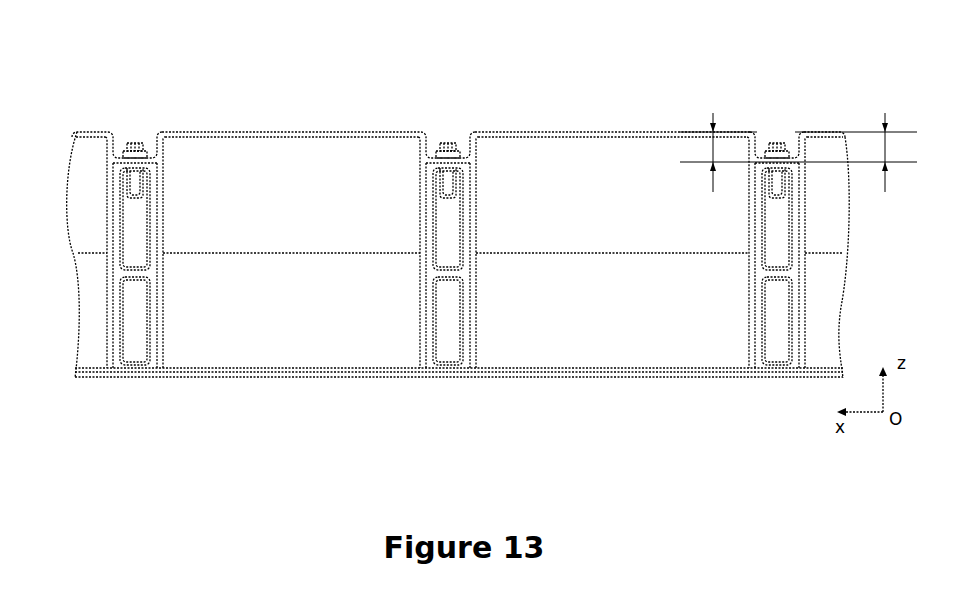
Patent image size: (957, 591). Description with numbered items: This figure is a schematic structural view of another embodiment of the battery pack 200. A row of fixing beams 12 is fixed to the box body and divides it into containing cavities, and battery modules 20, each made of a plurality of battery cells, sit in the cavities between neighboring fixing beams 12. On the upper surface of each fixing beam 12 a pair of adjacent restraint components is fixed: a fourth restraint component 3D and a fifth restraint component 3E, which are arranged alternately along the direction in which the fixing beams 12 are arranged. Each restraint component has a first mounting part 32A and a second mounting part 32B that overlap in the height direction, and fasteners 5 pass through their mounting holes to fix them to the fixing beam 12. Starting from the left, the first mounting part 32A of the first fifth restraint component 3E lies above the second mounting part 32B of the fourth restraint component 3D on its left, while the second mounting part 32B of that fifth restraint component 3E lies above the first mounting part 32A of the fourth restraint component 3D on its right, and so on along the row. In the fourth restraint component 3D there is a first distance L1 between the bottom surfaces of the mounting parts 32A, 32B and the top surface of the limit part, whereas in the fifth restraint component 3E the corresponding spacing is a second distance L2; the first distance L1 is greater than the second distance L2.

The battery pack 200 is at (487, 14).
The fourth restraint component 3D is at (88, 132).
The fifth restraint component 3E is at (288, 132).
The fixing beam 12 is at (127, 347).
The battery module 20 is at (285, 347).
The fastener 5 is at (449, 145).
The first mounting part 32A is at (148, 157).
The second mounting part 32B is at (435, 162).
The first distance L1 is at (798, 152).
The second distance L2 is at (856, 152).